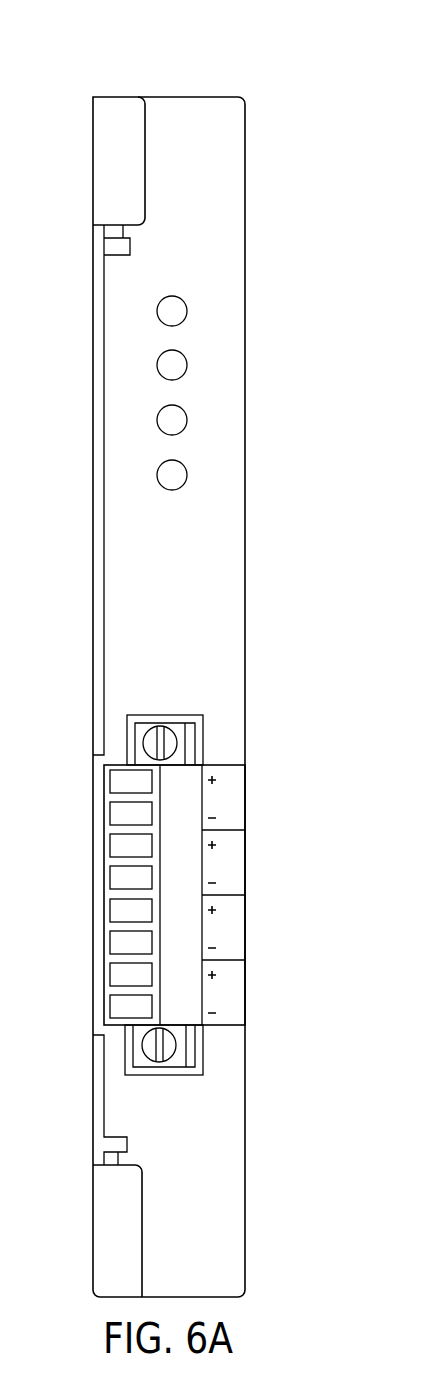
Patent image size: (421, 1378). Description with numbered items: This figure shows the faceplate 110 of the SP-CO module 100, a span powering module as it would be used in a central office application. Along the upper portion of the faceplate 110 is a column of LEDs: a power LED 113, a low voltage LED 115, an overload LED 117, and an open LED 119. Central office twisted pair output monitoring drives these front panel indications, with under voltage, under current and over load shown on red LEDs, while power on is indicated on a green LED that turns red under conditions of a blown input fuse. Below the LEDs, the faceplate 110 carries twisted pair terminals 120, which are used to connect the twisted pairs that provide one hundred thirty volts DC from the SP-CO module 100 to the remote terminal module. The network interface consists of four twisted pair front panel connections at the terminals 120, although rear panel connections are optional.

The SP-CO module 100 is at (144, 69).
The faceplate 110 is at (118, 278).
The power LED 113 is at (164, 297).
The low voltage LED 115 is at (161, 353).
The overload LED 117 is at (161, 408).
The open LED 119 is at (160, 463).
The twisted pair terminals 120 is at (82, 772).